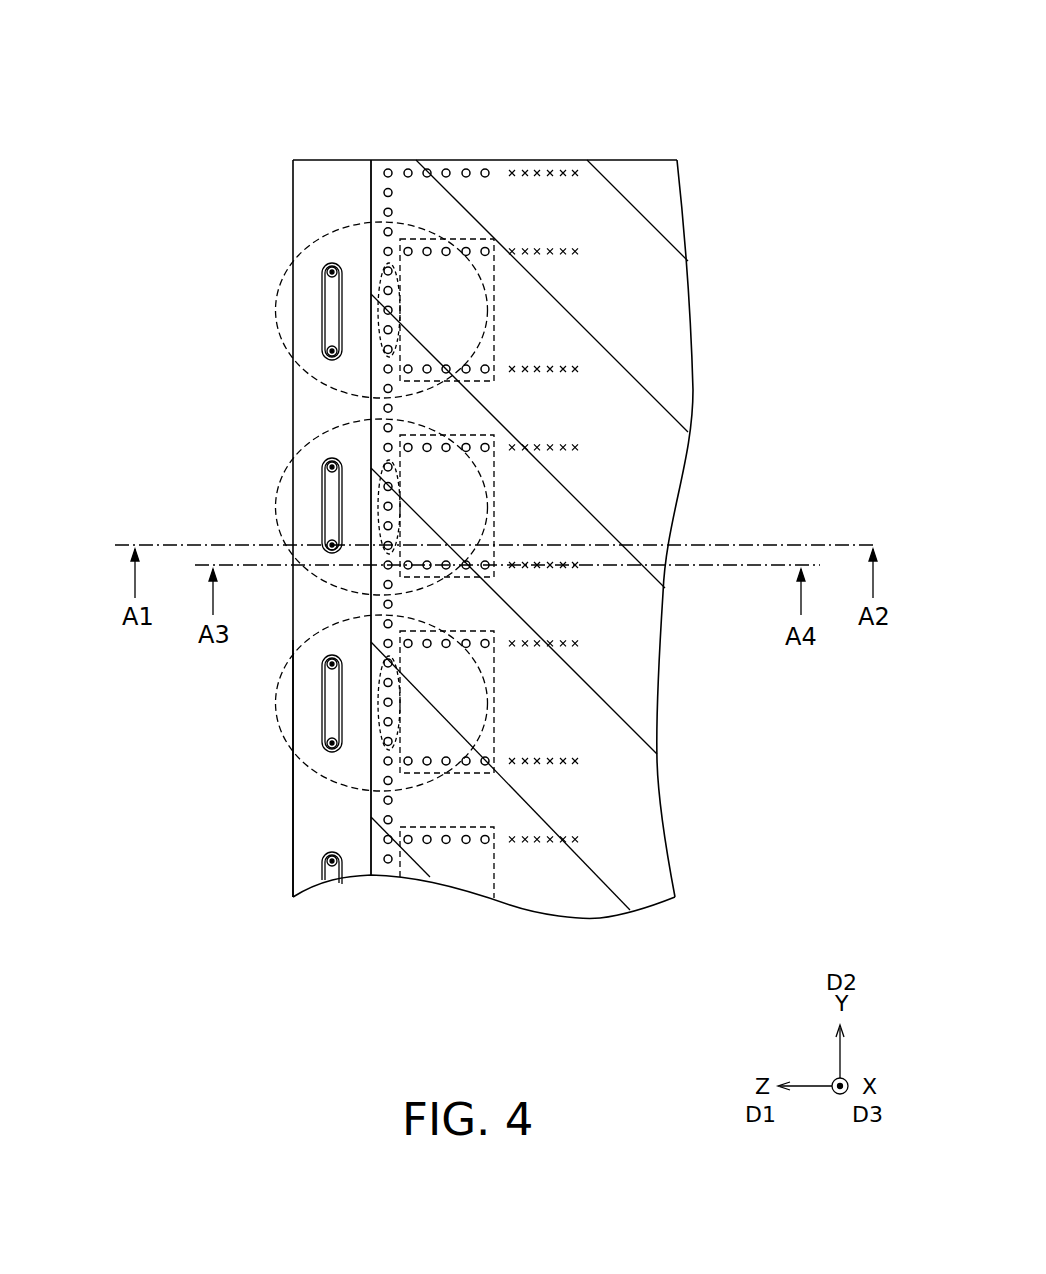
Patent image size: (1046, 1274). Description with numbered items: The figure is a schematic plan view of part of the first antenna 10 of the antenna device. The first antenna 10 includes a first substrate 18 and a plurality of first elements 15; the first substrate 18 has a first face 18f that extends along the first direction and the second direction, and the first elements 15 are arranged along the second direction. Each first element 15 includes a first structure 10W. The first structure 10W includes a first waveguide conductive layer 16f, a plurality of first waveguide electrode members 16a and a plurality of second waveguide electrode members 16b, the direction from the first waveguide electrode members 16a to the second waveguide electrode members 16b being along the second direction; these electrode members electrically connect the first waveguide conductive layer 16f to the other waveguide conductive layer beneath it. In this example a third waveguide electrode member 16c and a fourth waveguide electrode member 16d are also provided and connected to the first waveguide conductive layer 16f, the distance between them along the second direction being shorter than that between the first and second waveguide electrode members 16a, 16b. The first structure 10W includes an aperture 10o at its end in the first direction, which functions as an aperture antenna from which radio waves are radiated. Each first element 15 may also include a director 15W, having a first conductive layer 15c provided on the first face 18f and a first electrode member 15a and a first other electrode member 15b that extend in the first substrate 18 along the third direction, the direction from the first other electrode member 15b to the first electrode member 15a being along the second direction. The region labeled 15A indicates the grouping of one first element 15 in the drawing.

The first antenna 10 is at (808, 103).
The first structure 10W is at (365, 433).
The aperture 10o is at (375, 548).
The first element 15 is at (273, 303).
The clip region 15A is at (283, 277).
The director 15W is at (108, 392).
The first electrode member 15a is at (330, 467).
The first other electrode member 15b is at (330, 545).
The first conductive layer 15c is at (330, 508).
The first waveguide electrode members 16a is at (485, 565).
The second waveguide electrode members 16b is at (408, 447).
The third waveguide electrode member 16c is at (388, 545).
The fourth waveguide electrode member 16d is at (388, 467).
The first waveguide conductive layer 16f is at (630, 510).
The first substrate 18 is at (293, 820).
The first face 18f is at (303, 875).